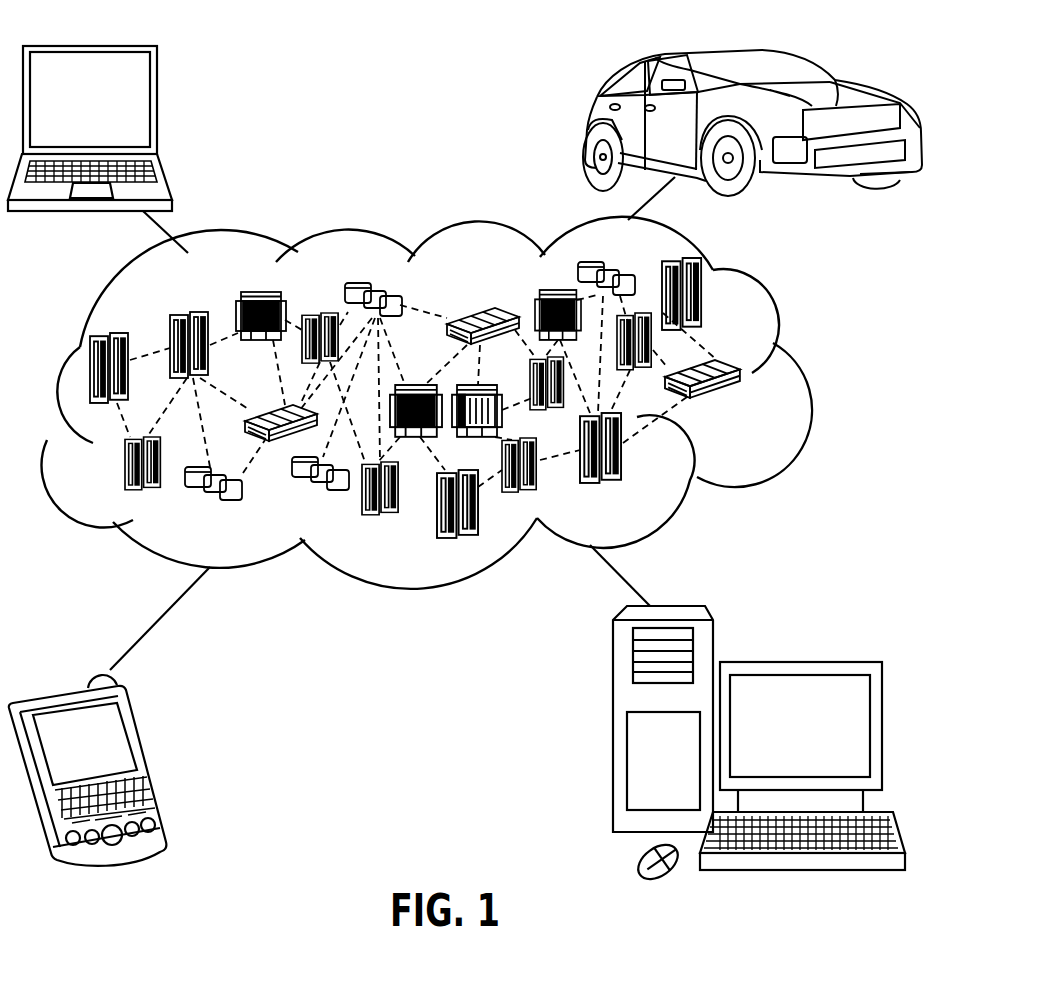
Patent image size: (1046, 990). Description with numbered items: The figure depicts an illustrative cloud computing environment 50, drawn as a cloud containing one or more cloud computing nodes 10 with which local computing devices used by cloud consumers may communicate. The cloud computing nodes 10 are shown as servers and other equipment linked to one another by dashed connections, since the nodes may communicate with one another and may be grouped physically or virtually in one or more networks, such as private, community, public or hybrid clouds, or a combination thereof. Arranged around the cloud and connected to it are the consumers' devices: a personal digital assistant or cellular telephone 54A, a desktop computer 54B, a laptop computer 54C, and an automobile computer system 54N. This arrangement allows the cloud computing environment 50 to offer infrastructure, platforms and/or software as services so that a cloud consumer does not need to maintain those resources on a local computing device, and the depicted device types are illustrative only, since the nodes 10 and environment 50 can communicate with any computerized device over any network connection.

The cloud computing nodes 10 is at (747, 409).
The cloud computing environment 50 is at (802, 378).
The personal digital assistant (PDA) or cellular telephone 54A is at (148, 757).
The desktop computer 54B is at (797, 662).
The laptop computer 54C is at (160, 108).
The automobile computer system 54N is at (585, 126).